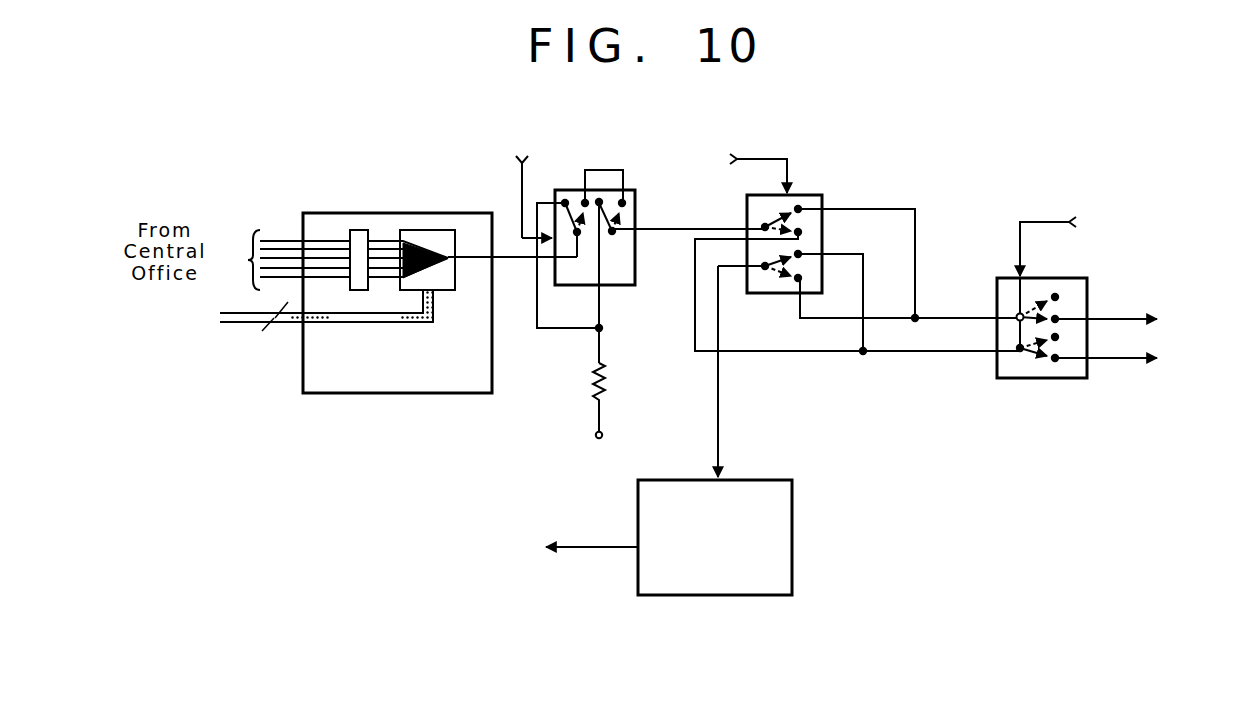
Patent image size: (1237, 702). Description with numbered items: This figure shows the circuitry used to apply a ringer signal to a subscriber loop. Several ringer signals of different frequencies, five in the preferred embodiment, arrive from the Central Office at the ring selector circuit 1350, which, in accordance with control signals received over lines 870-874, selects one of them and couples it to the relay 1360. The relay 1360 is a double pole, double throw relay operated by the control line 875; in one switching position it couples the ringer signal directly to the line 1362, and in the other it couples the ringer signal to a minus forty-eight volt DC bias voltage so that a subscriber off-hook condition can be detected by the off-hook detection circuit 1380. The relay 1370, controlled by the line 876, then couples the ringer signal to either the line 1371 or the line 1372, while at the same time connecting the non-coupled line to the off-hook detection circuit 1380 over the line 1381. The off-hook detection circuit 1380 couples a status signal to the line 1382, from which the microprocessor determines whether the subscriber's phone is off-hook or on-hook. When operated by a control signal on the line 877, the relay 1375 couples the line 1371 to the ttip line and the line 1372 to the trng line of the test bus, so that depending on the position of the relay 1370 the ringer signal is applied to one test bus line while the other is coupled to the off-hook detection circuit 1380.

The ring selector circuit 1350 is at (387, 212).
The control lines 870-874 is at (240, 322).
The control line 875 is at (527, 166).
The relay 1360 is at (636, 199).
The line 1362 is at (697, 228).
The control line 876 is at (765, 157).
The relay 1370 is at (823, 198).
The line 1371 is at (949, 316).
The line 1372 is at (945, 353).
The control line 877 is at (1042, 221).
The relay 1375 is at (1088, 285).
The line 1381 is at (720, 410).
The off-hook detection circuit 1380 is at (793, 482).
The line 1382 is at (585, 550).